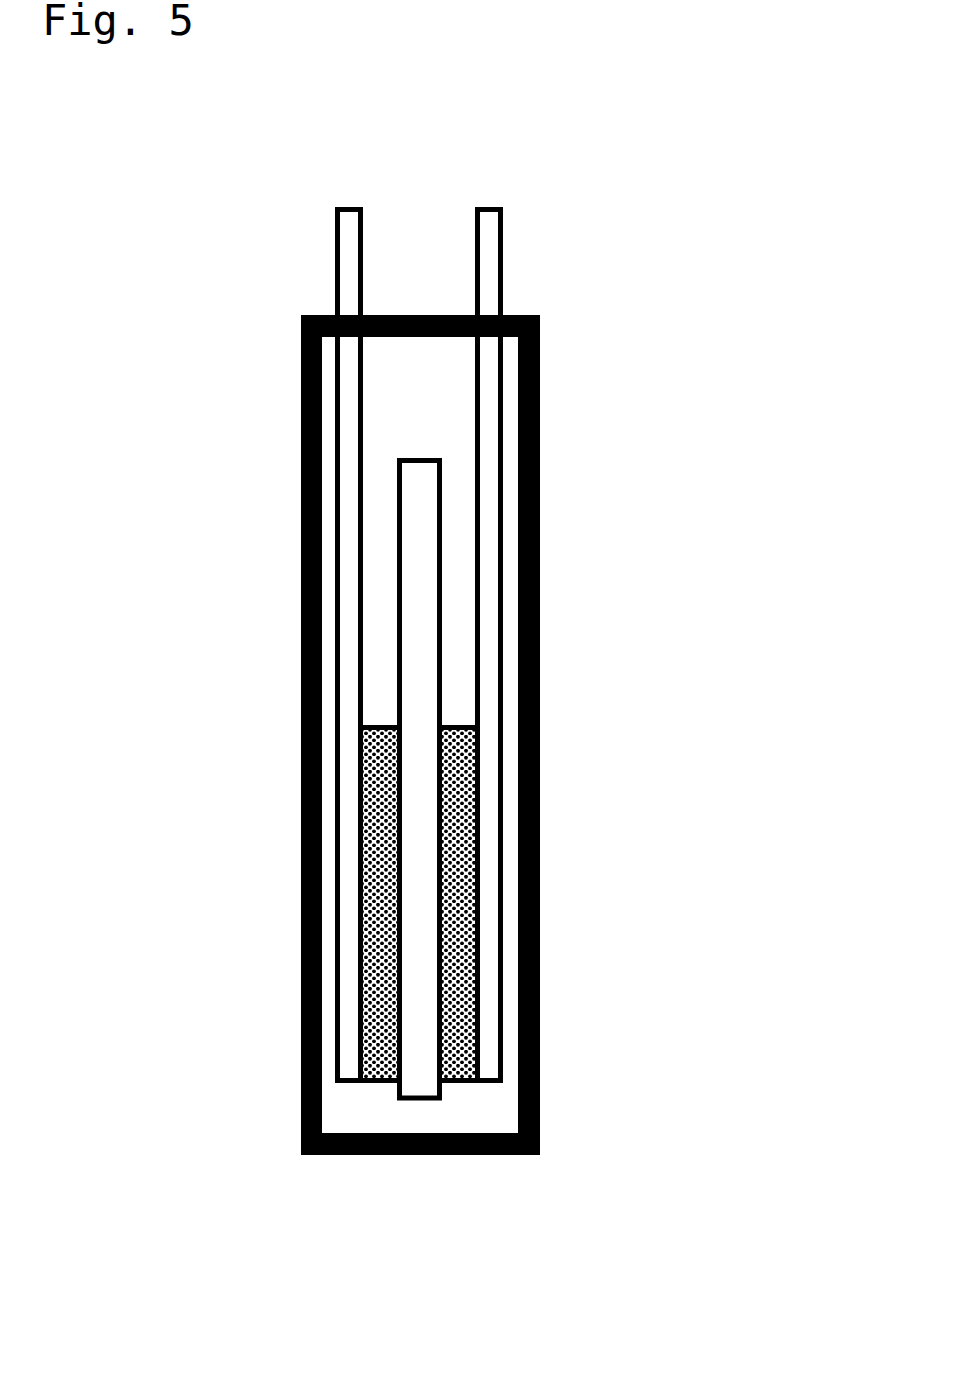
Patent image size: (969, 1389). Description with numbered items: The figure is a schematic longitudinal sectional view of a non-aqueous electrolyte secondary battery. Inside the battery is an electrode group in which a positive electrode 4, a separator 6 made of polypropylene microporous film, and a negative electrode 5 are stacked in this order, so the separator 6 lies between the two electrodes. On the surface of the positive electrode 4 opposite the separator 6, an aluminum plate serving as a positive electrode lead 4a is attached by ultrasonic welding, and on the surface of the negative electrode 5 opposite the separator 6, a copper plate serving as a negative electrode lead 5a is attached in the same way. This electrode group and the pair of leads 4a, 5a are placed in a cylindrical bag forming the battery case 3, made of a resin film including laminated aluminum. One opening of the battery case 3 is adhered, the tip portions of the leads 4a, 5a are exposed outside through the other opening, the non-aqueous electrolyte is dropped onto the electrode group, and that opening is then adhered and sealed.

The battery case 3 is at (540, 353).
The positive electrode 4 is at (377, 1067).
The positive electrode lead 4a is at (335, 245).
The negative electrode 5 is at (470, 1058).
The negative electrode lead 5a is at (503, 225).
The separator 6 is at (422, 1062).